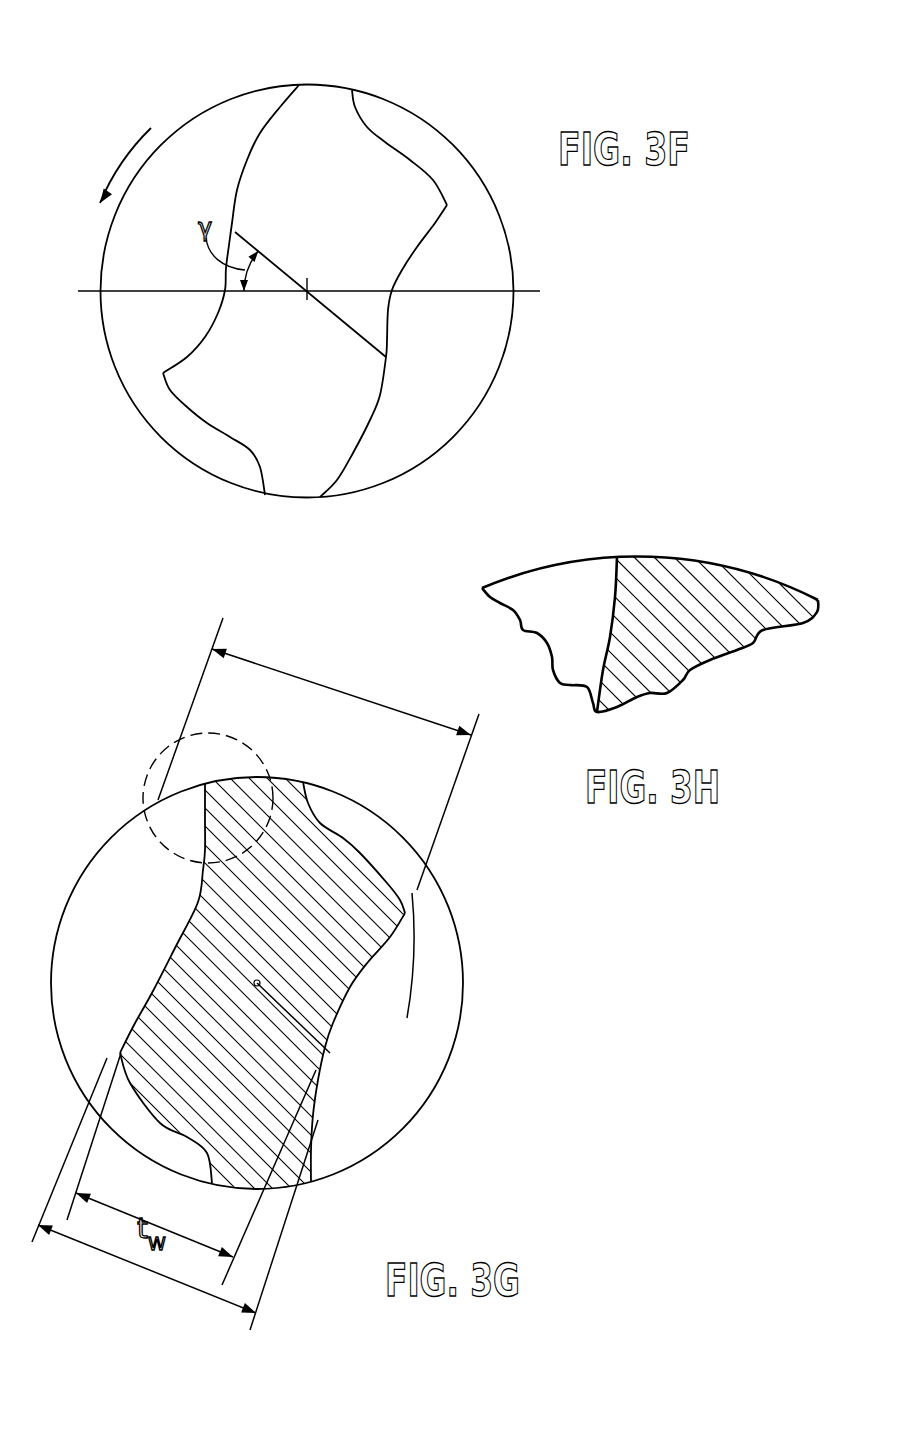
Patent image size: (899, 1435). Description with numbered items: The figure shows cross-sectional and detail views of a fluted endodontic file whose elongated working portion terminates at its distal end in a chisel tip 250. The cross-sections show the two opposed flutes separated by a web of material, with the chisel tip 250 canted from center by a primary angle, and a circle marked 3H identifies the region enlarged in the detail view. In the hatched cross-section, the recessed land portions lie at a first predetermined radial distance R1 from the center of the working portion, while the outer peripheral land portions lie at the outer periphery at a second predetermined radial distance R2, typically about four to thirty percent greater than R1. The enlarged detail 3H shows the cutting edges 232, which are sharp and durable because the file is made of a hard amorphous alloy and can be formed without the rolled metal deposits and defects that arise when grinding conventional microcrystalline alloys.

In FIG. 3F, the cutting edges 232 is at (298, 85).
In FIG. 3G, the cutting edges 232 is at (205, 786).
In FIG. 3H, the cutting edges 232 is at (610, 545).
In FIG. 3F, the chisel tip 250 is at (420, 88).
In FIG. 3G, the detail region shown in FIG. 3H is at (155, 758).
In FIG. 3G, the first predetermined radial distance R1 is at (257, 983).
In FIG. 3G, the second predetermined radial distance R2 is at (396, 1123).